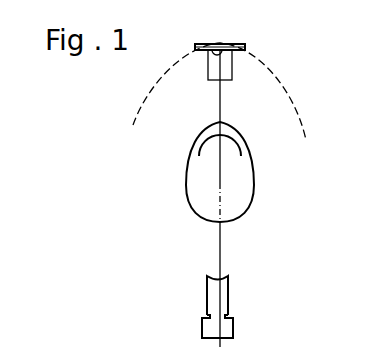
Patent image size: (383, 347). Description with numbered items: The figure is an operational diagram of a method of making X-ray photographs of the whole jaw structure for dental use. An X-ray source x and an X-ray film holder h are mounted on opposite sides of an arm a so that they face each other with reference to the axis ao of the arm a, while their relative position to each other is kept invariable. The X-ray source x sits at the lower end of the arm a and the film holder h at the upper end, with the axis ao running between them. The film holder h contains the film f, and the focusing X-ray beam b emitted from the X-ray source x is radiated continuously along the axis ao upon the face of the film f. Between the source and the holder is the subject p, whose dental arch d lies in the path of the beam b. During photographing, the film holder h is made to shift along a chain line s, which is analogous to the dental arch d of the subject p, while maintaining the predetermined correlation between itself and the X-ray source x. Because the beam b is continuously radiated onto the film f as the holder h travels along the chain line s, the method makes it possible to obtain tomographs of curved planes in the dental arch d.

The chain line s is at (288, 97).
The X-ray film holder h is at (238, 45).
The film f is at (213, 47).
The subject p is at (235, 200).
The dental arch d is at (238, 143).
The axis of the arm ao is at (218, 248).
The focusing X-ray beam b is at (218, 260).
The arm a is at (222, 302).
The X-ray source x is at (227, 330).